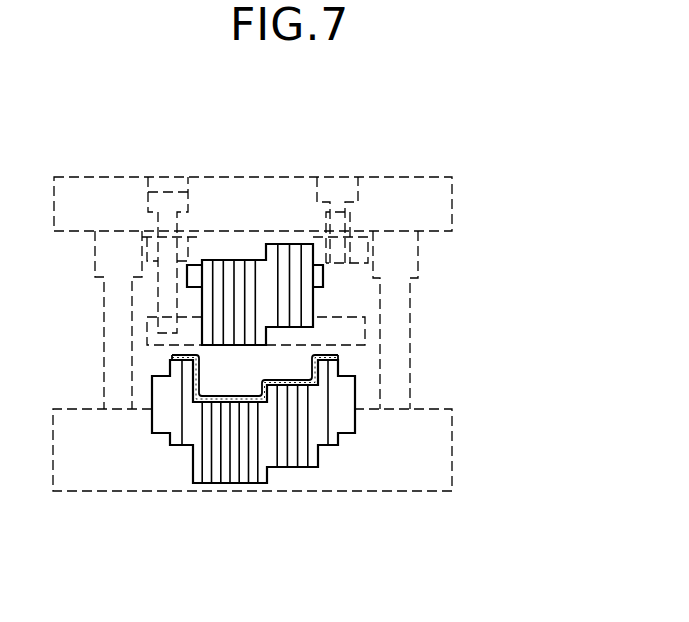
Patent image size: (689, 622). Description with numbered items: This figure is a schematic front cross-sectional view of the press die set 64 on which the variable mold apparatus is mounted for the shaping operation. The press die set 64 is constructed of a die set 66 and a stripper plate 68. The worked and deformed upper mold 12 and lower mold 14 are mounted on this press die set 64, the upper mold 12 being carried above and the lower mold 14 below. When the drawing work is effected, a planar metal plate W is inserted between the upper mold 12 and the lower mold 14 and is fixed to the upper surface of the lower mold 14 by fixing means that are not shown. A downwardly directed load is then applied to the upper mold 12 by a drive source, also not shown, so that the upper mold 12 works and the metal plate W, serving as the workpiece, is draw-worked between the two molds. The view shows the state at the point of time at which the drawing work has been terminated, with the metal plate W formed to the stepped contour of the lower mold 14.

The upper mold 12 is at (230, 251).
The lower mold 14 is at (268, 479).
The press die set 64 is at (378, 166).
The die set 66 is at (455, 200).
The stripper plate 68 is at (363, 330).
The metal plate W is at (337, 355).